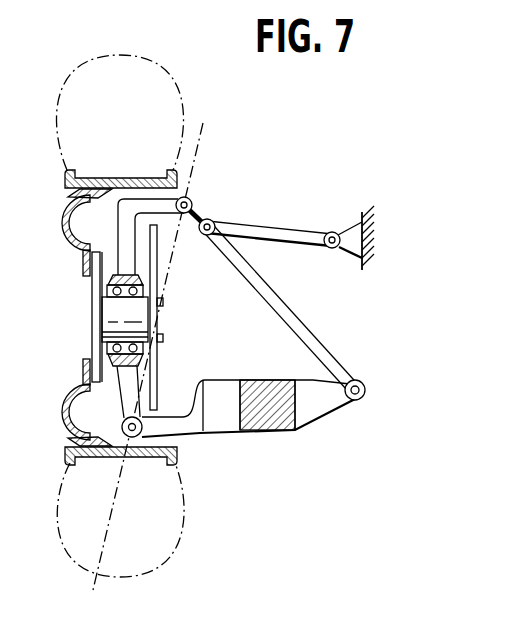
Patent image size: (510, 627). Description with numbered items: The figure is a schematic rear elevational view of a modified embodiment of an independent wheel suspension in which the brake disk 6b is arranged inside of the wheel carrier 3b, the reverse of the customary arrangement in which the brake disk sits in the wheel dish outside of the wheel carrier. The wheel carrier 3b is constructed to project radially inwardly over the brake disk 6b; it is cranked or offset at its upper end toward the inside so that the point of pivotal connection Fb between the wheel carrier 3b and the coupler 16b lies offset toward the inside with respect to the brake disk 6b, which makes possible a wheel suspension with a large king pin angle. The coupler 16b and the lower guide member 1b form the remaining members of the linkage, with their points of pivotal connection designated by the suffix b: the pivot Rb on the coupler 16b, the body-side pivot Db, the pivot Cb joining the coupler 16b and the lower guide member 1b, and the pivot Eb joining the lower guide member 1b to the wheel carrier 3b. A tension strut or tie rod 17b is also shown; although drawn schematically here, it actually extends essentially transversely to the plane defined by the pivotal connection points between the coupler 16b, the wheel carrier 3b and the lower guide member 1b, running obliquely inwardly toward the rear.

The lower guide member 1b is at (223, 418).
The wheel carrier 3b is at (118, 231).
The brake disk 6b is at (157, 272).
The coupler 16b is at (274, 302).
The tie rod 17b is at (285, 227).
The point of pivotal connection Fb is at (191, 200).
The point of pivotal connection Rb is at (215, 221).
The point of pivotal connection Db is at (336, 233).
The point of pivotal connection Cb is at (360, 400).
The point of pivotal connection Eb is at (122, 427).